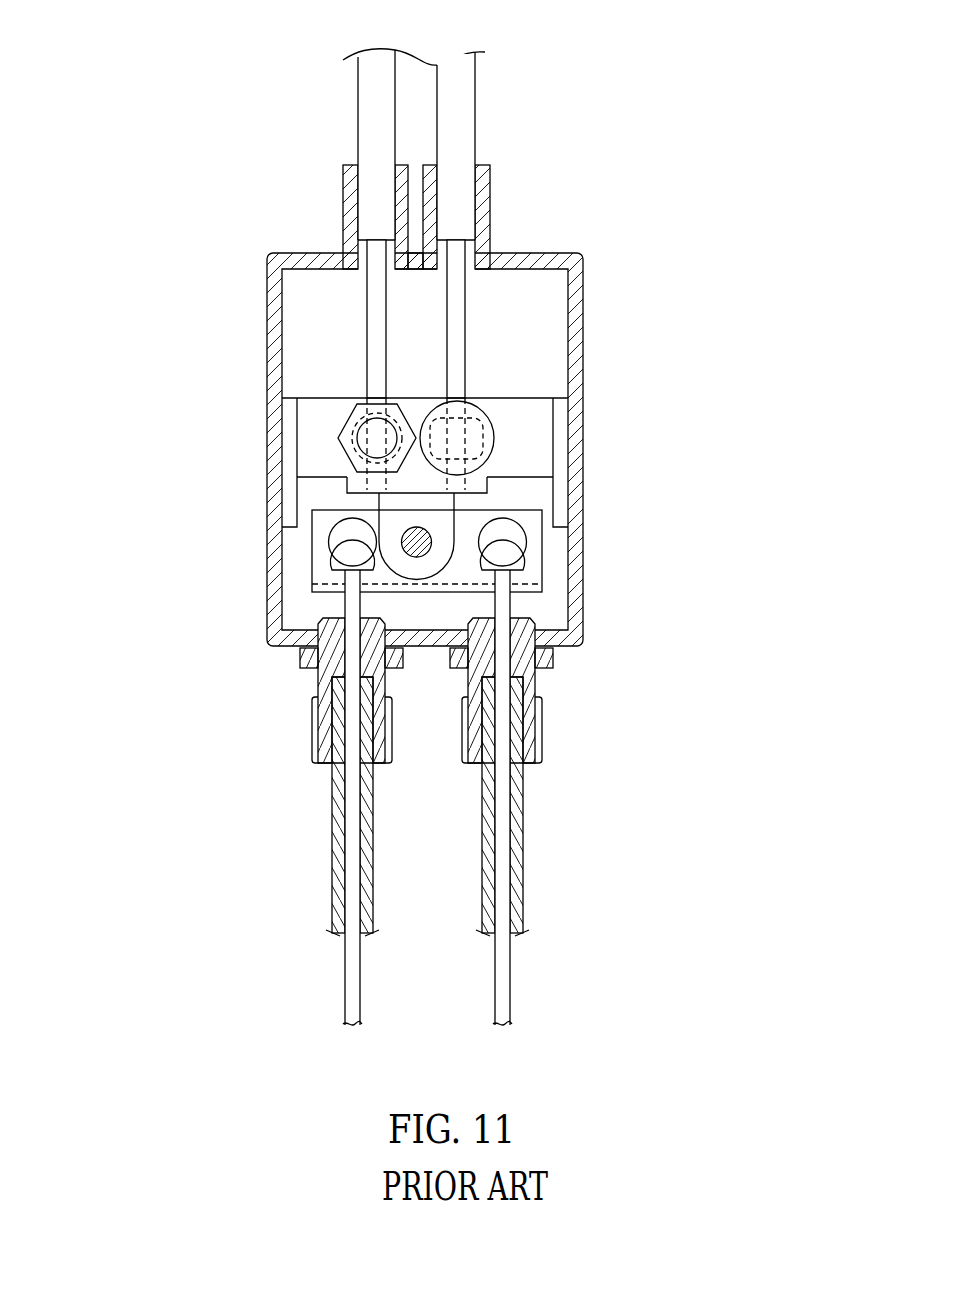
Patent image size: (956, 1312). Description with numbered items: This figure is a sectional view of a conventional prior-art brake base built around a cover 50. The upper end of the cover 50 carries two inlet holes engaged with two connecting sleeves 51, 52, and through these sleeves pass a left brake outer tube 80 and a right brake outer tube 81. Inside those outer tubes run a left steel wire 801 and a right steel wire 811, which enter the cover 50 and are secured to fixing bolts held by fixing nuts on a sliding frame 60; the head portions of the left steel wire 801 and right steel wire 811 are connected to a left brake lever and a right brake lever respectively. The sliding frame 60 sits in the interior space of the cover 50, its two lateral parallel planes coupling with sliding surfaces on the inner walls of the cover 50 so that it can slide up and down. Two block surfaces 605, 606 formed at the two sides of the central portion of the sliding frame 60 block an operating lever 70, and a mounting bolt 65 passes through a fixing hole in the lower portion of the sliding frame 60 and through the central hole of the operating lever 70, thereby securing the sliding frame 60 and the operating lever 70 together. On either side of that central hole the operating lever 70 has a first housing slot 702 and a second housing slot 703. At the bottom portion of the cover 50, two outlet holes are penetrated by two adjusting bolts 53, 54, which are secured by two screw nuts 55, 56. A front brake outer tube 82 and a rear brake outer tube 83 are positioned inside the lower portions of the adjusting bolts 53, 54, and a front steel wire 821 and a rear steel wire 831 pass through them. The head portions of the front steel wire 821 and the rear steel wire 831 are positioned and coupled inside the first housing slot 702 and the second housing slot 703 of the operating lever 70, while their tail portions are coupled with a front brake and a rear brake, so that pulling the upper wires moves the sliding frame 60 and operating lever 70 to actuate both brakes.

The cover 50 is at (576, 259).
The connecting sleeve 51 is at (343, 210).
The connecting sleeve 52 is at (490, 203).
The adjusting bolt 53 is at (327, 735).
The adjusting bolt 54 is at (543, 758).
The screw nut 55 is at (300, 663).
The screw nut 56 is at (557, 670).
The sliding frame 60 is at (310, 463).
The block surface 605 is at (315, 483).
The block surface 606 is at (533, 483).
The mounting bolt 65 is at (400, 547).
The operating lever 70 is at (533, 530).
The first housing slot 702 is at (527, 543).
The second housing slot 703 is at (327, 538).
The left brake outer tube 80 is at (357, 107).
The left steel wire 801 is at (367, 310).
The right brake outer tube 81 is at (477, 110).
The right steel wire 811 is at (467, 312).
The front brake outer tube 82 is at (518, 857).
The front steel wire 821 is at (503, 607).
The rear brake outer tube 83 is at (342, 827).
The rear steel wire 831 is at (344, 603).